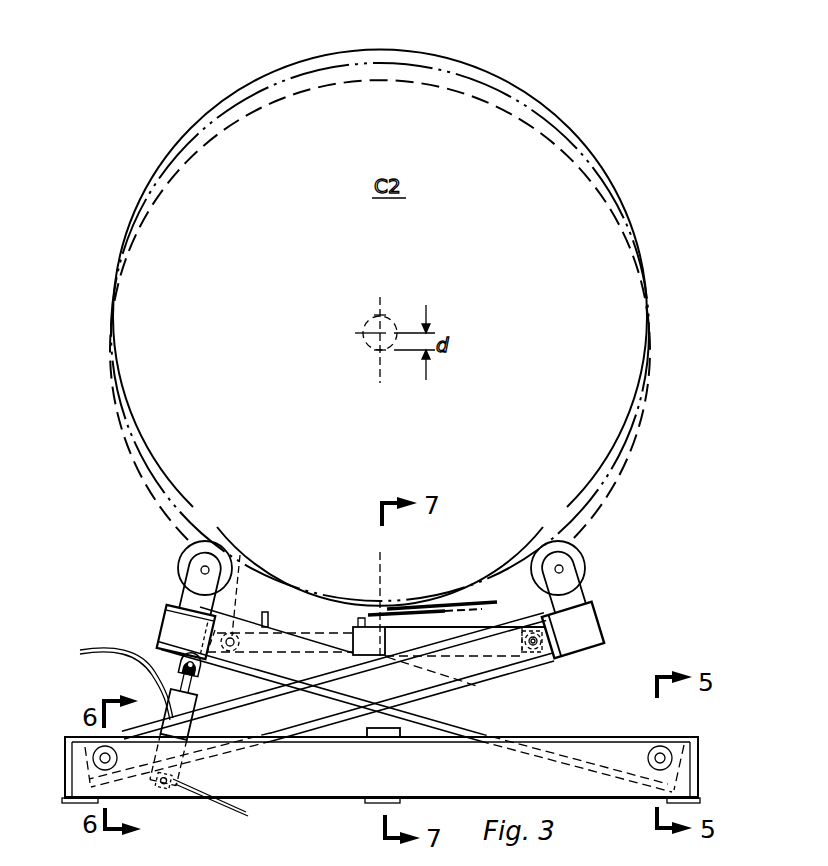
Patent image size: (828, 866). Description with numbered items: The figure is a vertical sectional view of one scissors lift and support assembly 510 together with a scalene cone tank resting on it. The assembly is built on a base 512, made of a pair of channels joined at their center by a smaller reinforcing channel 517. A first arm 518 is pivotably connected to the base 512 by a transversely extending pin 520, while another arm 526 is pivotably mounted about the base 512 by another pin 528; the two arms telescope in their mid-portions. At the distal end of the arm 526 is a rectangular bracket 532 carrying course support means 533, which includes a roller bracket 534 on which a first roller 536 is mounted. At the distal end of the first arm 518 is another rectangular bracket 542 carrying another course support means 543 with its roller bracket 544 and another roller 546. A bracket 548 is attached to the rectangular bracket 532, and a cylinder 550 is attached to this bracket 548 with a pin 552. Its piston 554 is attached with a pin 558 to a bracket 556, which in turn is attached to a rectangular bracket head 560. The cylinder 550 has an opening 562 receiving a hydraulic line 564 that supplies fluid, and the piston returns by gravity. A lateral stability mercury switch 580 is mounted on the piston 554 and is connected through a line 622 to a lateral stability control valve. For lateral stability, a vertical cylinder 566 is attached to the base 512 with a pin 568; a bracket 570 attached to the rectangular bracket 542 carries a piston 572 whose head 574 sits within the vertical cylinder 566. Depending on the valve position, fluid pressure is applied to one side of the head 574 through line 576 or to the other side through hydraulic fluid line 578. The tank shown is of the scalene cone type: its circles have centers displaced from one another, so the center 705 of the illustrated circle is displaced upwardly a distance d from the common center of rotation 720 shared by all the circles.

The scissors lift and support assembly 510 is at (634, 603).
The base 512 is at (65, 760).
The reinforcing channel 517 is at (432, 706).
The first arm 518 is at (380, 738).
The pin 520 is at (672, 763).
The arm 526 is at (327, 740).
The pin 528 is at (68, 782).
The rectangular bracket 532 is at (608, 630).
The course support means 533 is at (614, 563).
The roller bracket 534 is at (588, 592).
The first roller 536 is at (582, 557).
The rectangular bracket 542 is at (165, 610).
The course support means 543 is at (176, 549).
The roller bracket 544 is at (185, 590).
The roller 546 is at (200, 545).
The bracket 548 is at (531, 633).
The cylinder 550 is at (457, 626).
The pin 552 is at (556, 656).
The piston 554 is at (327, 633).
The bracket 556 is at (252, 585).
The pin 558 is at (252, 612).
The rectangular bracket head 560 is at (377, 594).
The opening 562 is at (361, 618).
The hydraulic line 564 is at (440, 608).
The vertical cylinder 566 is at (162, 693).
The pin 568 is at (168, 790).
The bracket 570 is at (184, 658).
The piston 572 is at (152, 657).
The head 574 is at (200, 708).
The line 576 is at (92, 639).
The hydraulic fluid line 578 is at (213, 814).
The lateral stability mercury switch 580 is at (234, 638).
The line 622 is at (264, 612).
The center 705 is at (376, 331).
The common center of rotation 720 is at (377, 351).